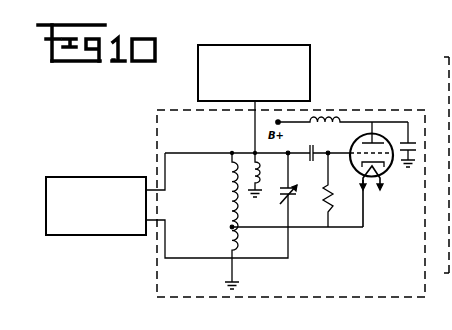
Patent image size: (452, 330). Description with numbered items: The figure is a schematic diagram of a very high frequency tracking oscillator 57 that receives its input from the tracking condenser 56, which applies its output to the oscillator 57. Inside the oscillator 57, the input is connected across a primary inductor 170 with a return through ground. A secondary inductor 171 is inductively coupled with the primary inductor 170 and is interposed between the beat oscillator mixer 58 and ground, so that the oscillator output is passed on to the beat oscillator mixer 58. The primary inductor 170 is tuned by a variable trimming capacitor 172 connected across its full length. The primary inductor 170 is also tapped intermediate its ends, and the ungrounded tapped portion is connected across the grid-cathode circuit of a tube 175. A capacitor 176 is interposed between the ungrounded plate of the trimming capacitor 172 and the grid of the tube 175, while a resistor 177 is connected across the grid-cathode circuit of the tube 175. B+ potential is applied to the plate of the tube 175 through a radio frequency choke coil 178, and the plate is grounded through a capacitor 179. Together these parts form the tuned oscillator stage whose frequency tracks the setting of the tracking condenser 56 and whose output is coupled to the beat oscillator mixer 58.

The tracking condenser 56 is at (87, 235).
The tracking oscillator 57 is at (351, 298).
The beat oscillator mixer 58 is at (310, 89).
The primary inductor 170 is at (228, 183).
The secondary inductor 171 is at (267, 175).
The variable trimming capacitor 172 is at (302, 190).
The tube 175 is at (384, 178).
The capacitor 176 is at (308, 150).
The resistor 177 is at (343, 190).
The radio frequency choke coil 178 is at (316, 130).
The capacitor 179 is at (400, 144).